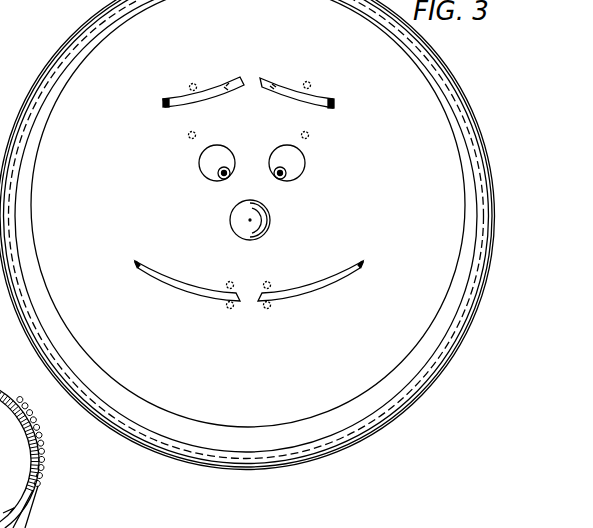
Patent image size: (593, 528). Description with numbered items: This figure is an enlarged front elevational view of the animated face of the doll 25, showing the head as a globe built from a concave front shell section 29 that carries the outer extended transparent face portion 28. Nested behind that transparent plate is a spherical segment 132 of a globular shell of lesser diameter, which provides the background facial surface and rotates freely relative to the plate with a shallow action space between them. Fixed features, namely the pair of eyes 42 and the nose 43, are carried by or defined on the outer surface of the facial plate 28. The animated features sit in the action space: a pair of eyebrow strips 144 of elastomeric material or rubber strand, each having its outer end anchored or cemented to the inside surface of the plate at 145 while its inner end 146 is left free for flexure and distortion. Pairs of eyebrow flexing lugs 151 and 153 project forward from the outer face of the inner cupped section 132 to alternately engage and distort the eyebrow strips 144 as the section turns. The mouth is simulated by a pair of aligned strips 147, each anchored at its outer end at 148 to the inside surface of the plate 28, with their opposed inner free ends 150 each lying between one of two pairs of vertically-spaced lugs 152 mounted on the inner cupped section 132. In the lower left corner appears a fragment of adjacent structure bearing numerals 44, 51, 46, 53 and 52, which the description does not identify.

The face portion 28 is at (425, 149).
The concave front shell section 29 is at (361, 452).
The spherical segment 132 is at (410, 361).
The eyes 42 is at (205, 178).
The nose 43 is at (272, 226).
The eyebrow strips 144 is at (222, 80).
The anchored outer end of eyebrow strip 145 is at (162, 102).
The inner end of eyebrow strip 146 is at (260, 76).
The mouth strips 147 is at (175, 274).
The anchored outer end of mouth strip 148 is at (135, 261).
The inner free ends of mouth strips 150 is at (224, 301).
The eyebrow flexing lugs 151 is at (190, 84).
The vertically-spaced lugs 152 is at (265, 282).
The eyebrow flexing lugs 153 is at (188, 133).
The gear ring 44 is at (19, 442).
The ring flange 51 is at (0, 386).
The gear teeth 46 is at (25, 403).
The ring groove 53 is at (33, 419).
The ring shoulder 52 is at (0, 470).
The doll 25 is at (42, 522).